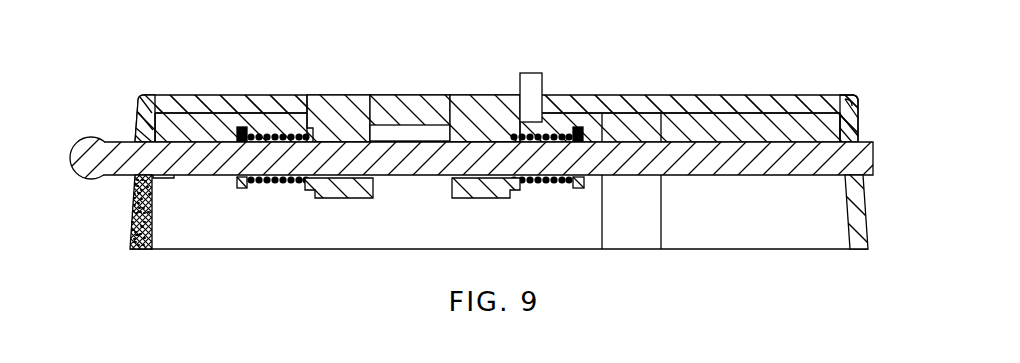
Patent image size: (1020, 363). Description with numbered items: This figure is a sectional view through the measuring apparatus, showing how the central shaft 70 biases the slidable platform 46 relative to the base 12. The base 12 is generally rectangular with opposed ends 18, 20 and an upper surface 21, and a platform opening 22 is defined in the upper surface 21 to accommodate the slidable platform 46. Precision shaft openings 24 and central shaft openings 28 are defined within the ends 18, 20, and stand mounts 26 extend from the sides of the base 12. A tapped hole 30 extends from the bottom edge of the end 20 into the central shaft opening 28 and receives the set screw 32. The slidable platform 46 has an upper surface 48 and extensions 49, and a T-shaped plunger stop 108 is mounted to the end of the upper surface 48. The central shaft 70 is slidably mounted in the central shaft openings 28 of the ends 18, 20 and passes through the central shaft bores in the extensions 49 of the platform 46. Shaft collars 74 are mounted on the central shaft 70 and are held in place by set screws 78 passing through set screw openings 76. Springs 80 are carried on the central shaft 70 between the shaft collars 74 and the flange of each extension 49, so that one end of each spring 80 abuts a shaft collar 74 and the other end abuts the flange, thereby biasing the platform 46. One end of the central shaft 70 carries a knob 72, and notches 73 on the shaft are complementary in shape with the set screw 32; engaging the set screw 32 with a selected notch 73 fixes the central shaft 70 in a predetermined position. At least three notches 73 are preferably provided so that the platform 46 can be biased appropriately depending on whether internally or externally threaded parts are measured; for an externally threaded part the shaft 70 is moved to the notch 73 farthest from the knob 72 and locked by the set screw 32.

The base 12 is at (666, 86).
The end 18 is at (133, 206).
The end 20 is at (868, 200).
The upper surface 21 is at (758, 94).
The platform opening 22 is at (183, 94).
The precision shaft openings 24 is at (287, 94).
The stand mounts 26 is at (662, 212).
The central shaft openings 28 is at (137, 138).
The tapped hole 30 is at (139, 251).
The set screw 32 is at (150, 238).
The slidable platform 46 is at (385, 86).
The upper surface 48 is at (457, 94).
The extensions 49 is at (347, 199).
The central shaft 70 is at (400, 177).
The knob 72 is at (89, 136).
The notches 73 is at (162, 178).
The shaft collars 74 is at (241, 190).
The set screw opening 76 is at (238, 134).
The set screws 78 is at (249, 132).
The springs 80 is at (263, 185).
The T-shaped plunger stops 108 is at (531, 73).